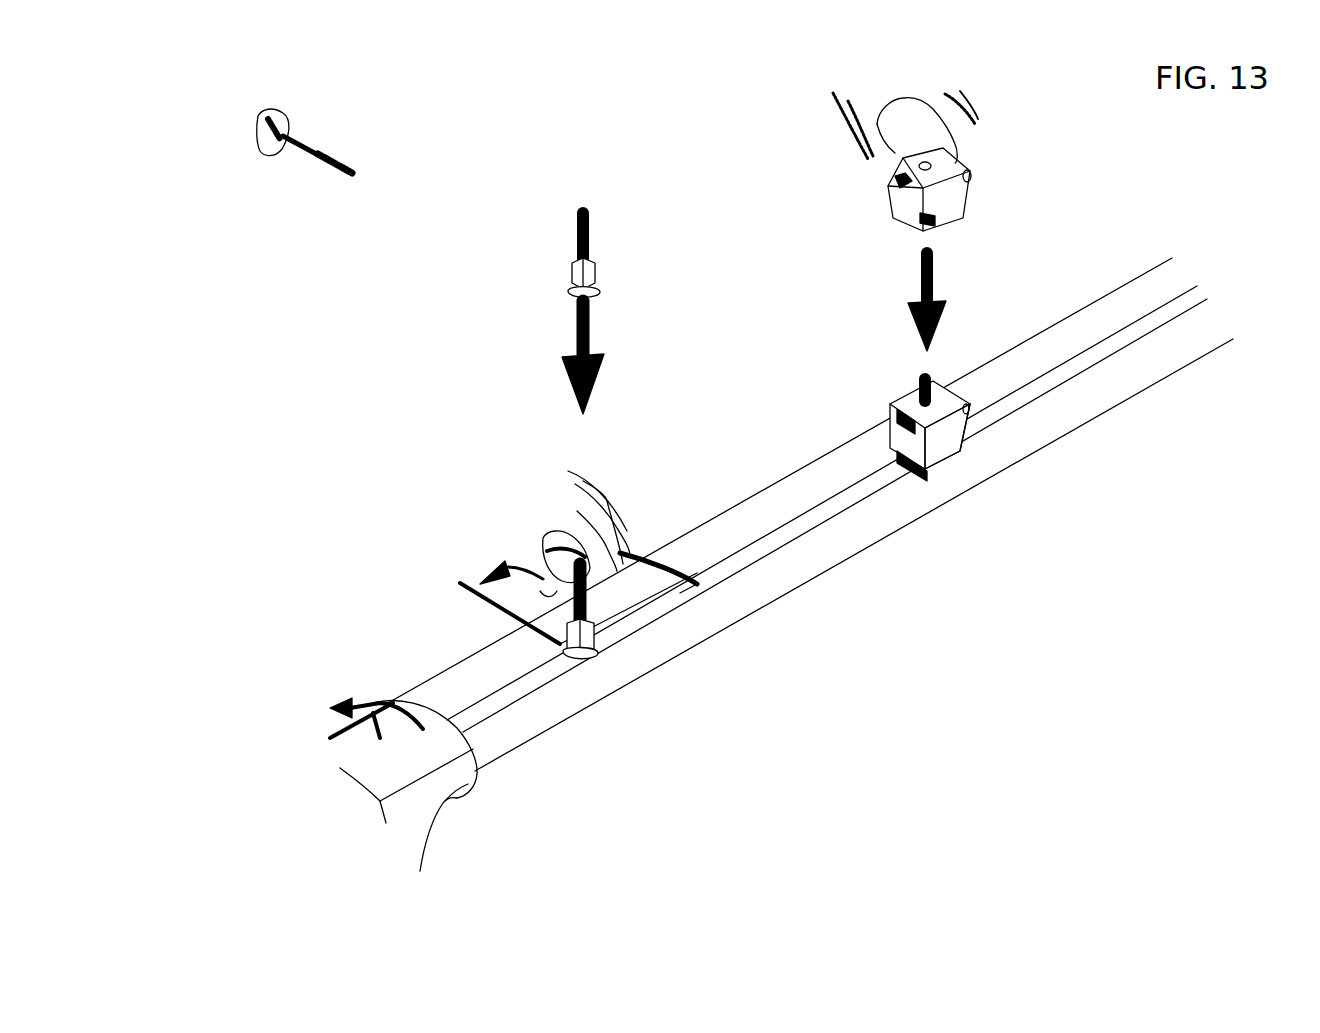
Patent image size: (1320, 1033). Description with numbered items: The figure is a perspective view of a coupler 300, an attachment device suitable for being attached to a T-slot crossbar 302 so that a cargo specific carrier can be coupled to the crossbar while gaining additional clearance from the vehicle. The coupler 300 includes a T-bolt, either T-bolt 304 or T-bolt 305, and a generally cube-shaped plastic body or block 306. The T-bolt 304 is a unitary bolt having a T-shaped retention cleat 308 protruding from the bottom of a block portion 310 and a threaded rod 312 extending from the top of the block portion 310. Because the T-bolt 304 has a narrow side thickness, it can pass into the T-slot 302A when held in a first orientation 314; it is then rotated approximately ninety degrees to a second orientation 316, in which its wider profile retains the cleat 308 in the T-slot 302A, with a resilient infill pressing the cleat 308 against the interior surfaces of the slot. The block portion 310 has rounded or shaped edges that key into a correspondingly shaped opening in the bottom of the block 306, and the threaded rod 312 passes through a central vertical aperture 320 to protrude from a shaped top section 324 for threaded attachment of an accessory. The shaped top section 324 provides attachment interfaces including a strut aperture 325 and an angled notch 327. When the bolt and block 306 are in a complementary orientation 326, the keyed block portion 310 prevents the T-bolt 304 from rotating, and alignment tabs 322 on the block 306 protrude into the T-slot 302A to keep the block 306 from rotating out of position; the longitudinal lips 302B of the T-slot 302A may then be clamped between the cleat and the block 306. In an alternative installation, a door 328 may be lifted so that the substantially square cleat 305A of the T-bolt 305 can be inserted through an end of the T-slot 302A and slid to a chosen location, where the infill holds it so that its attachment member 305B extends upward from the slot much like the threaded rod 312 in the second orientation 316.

The coupler 300 is at (1215, 252).
The crossbar 302 is at (602, 699).
The T-slot 302A is at (813, 514).
The longitudinal lips 302B is at (850, 484).
The T-bolt 304 is at (592, 246).
The T-bolt 305 is at (300, 158).
The cleat 305A is at (258, 117).
The attachment member 305B is at (325, 177).
The body 306 is at (888, 205).
The retention cleat 308 is at (593, 298).
The block portion 310 is at (597, 268).
The threaded rod 312 is at (592, 224).
The first orientation 314 is at (552, 298).
The second orientation 316 is at (620, 659).
The aperture 320 is at (970, 152).
The alignment tabs 322 is at (898, 478).
The shaped top section 324 is at (943, 393).
The strut aperture 325 is at (972, 412).
The complementary orientation 326 is at (960, 467).
The angled notch 327 is at (890, 417).
The door 328 is at (383, 703).